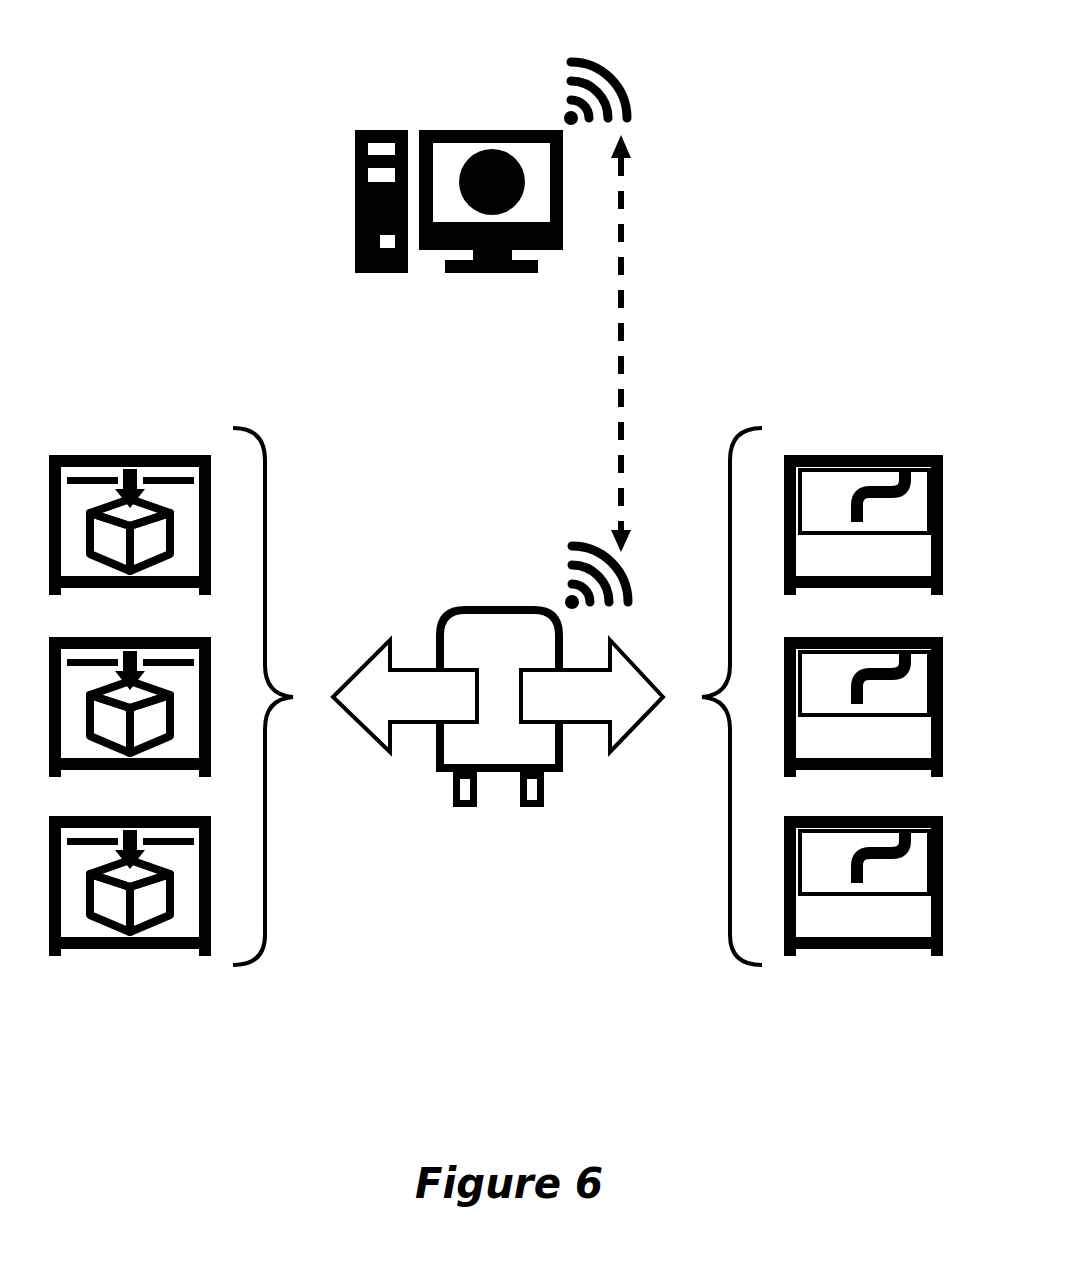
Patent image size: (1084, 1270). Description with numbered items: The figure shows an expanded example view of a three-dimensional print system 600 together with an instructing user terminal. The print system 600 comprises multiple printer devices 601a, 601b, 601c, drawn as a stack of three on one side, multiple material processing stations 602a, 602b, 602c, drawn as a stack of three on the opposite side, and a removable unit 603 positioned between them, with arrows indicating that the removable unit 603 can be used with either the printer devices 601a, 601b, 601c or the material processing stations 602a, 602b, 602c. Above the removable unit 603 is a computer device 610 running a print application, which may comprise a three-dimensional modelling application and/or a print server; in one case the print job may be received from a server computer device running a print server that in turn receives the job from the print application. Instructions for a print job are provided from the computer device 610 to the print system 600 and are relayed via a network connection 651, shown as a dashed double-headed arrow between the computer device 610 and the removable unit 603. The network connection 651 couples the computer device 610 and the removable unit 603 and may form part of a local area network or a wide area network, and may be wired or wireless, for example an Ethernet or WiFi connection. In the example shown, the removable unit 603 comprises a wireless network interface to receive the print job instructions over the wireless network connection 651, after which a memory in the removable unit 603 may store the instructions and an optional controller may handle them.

The 3D print system 600 is at (204, 240).
The computer device 610 is at (352, 197).
The network connection 651 is at (622, 358).
The removable unit 603 is at (473, 605).
The printer device 601a is at (155, 455).
The printer device 601b is at (211, 683).
The printer device 601c is at (169, 956).
The material processing station 602a is at (810, 457).
The material processing station 602b is at (786, 703).
The material processing station 602c is at (832, 944).